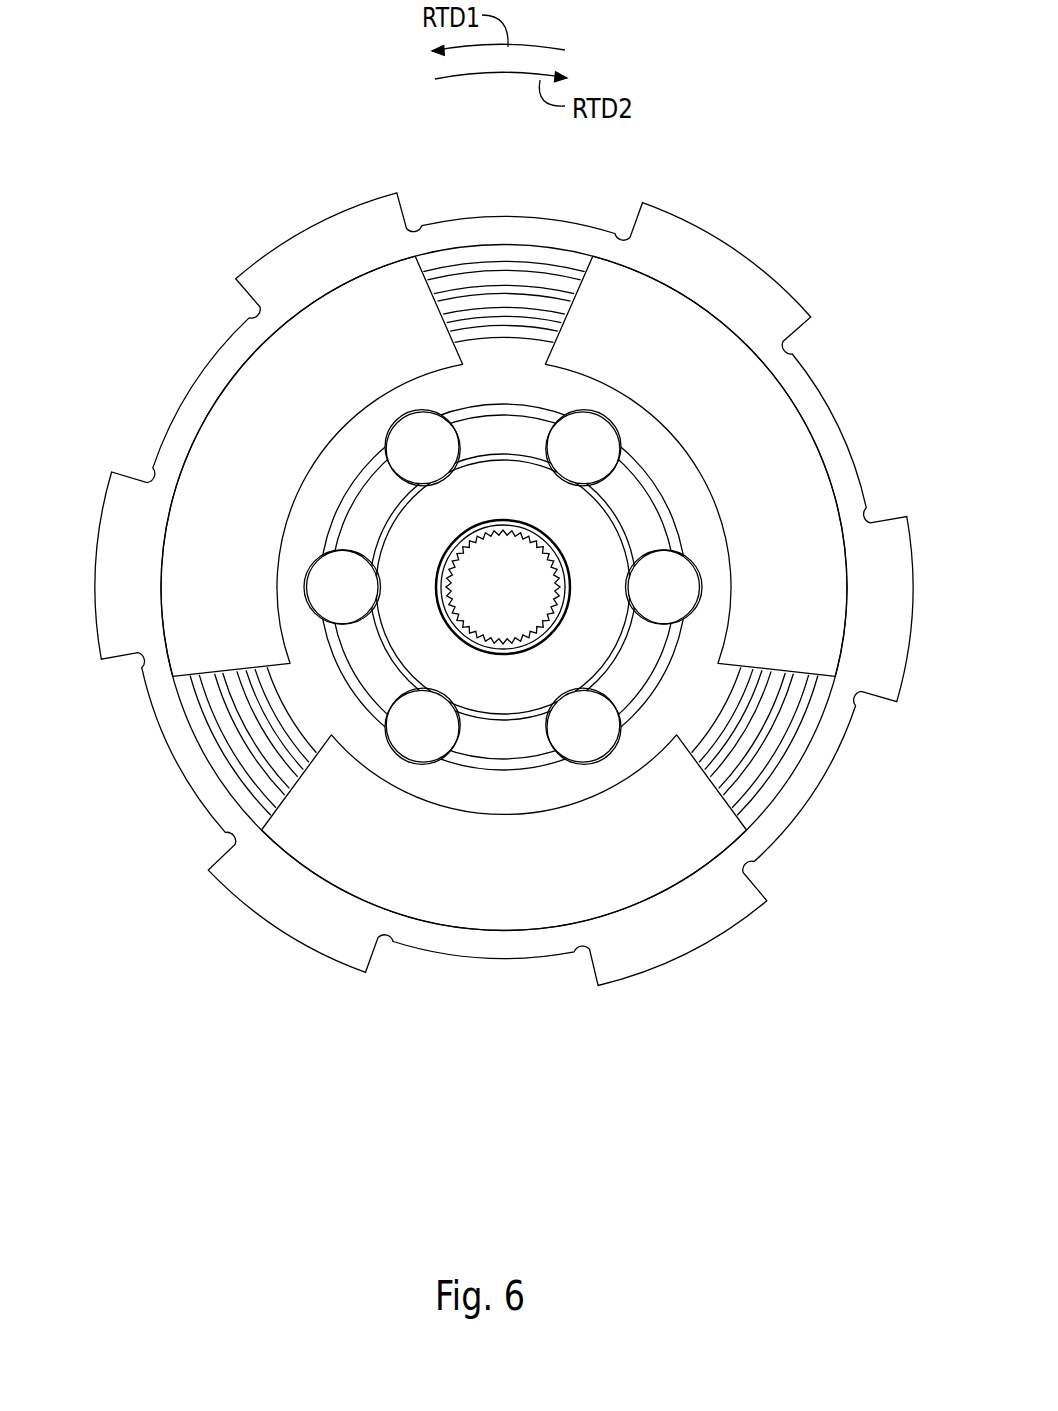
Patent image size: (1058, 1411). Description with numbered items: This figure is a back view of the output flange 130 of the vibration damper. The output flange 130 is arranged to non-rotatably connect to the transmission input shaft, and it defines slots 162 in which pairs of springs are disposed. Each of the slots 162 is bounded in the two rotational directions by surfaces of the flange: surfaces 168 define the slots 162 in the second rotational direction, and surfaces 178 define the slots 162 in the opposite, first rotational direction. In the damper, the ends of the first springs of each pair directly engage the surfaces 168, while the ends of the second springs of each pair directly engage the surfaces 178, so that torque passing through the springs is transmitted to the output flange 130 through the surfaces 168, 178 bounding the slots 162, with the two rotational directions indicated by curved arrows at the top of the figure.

The output flange 130 is at (717, 150).
The slots 162 is at (443, 585).
The surfaces 168 is at (417, 261).
The surfaces 178 is at (175, 573).